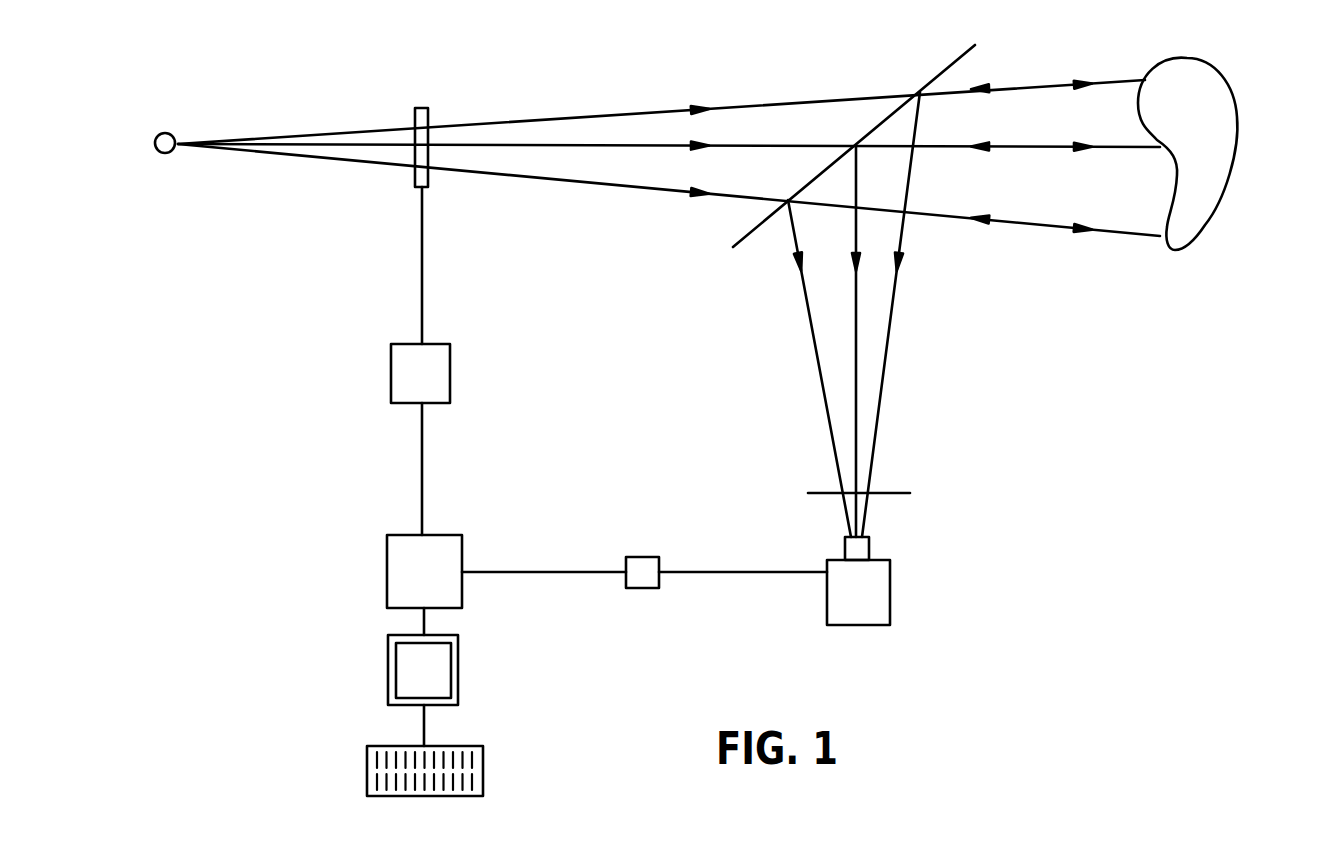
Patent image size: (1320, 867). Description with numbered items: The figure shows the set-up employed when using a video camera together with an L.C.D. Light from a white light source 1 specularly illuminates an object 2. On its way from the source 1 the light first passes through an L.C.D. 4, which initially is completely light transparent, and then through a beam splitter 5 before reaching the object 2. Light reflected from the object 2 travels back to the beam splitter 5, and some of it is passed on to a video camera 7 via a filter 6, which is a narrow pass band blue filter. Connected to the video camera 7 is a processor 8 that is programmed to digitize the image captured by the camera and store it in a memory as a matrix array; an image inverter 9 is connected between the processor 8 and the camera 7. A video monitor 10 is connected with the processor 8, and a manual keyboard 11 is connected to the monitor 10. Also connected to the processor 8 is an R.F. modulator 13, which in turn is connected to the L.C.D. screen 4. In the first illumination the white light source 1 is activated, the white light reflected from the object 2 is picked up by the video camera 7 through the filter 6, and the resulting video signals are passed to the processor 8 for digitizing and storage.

The white light source 1 is at (172, 133).
The object 2 is at (1220, 118).
The L.C.D. 4 is at (415, 118).
The beam splitter 5 is at (950, 65).
The filter 6 is at (820, 495).
The video camera 7 is at (835, 605).
The processor 8 is at (387, 548).
The image inverter 9 is at (626, 565).
The video monitor 10 is at (388, 648).
The manual keyboard 11 is at (367, 768).
The R.F. modulator 13 is at (391, 370).